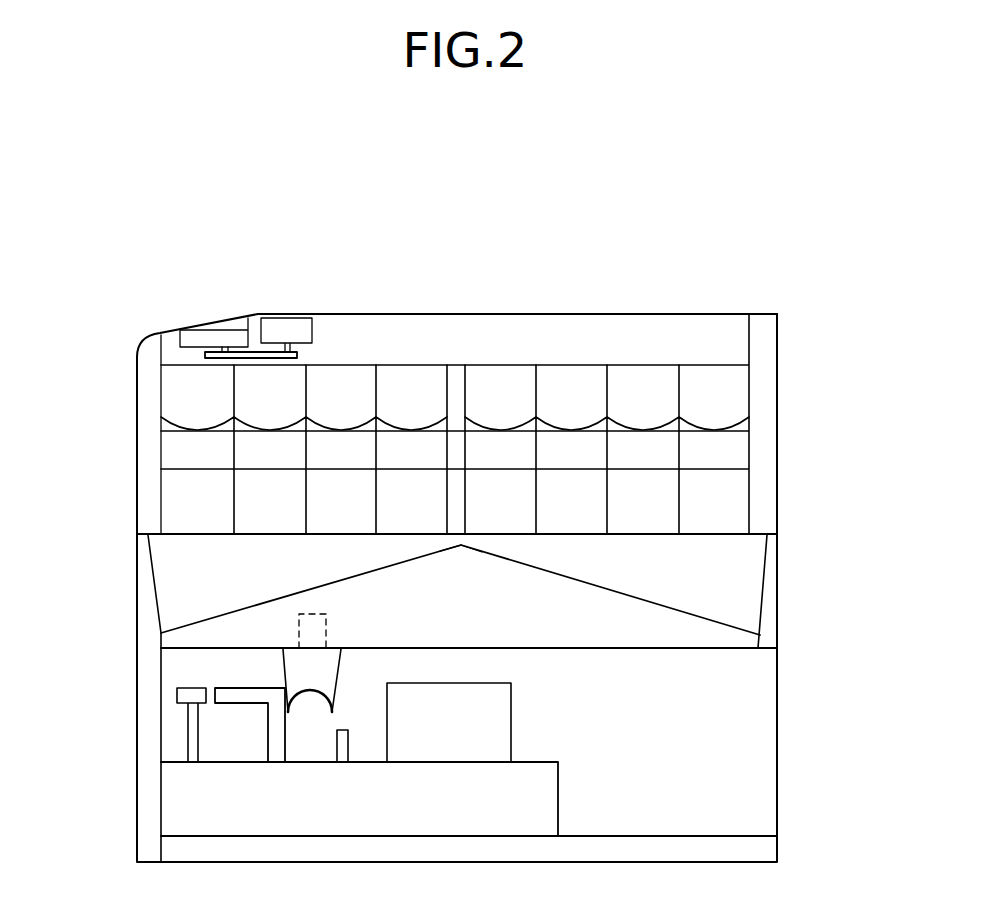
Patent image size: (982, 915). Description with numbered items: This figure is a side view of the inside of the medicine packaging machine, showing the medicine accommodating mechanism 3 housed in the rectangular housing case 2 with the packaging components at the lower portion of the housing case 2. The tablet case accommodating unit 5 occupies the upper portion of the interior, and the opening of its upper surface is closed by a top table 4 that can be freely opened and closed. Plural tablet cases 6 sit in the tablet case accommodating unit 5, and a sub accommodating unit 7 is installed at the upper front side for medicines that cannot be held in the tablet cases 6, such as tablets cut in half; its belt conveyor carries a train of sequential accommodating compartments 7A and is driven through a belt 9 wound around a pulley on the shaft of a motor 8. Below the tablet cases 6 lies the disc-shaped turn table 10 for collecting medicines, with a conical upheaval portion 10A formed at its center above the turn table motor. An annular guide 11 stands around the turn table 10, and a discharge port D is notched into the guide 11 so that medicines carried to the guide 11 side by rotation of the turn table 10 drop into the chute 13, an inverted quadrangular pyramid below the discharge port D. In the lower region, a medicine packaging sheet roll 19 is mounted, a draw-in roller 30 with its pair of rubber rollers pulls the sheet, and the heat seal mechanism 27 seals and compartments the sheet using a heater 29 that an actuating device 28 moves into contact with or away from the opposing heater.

The housing case 2 is at (778, 349).
The medicine accommodating mechanism 3 is at (506, 387).
The top table 4 is at (430, 315).
The tablet case accommodating unit 5 is at (162, 353).
The tablet case 6 is at (707, 365).
The sub accommodating unit 7 is at (197, 328).
The accommodating compartment 7A is at (192, 325).
The motor 8 is at (292, 332).
The belt 9 is at (213, 358).
The turn table 10 is at (703, 617).
The upheaval portion 10A is at (512, 555).
The guide 11 is at (817, 600).
The chute 13 is at (323, 673).
The medicine packaging sheet roll 19 is at (492, 715).
The heat seal mechanism 27 is at (206, 777).
The actuating device 28 is at (343, 753).
The heater 29 is at (277, 752).
The draw-in roller 30 is at (177, 695).
The discharge port D is at (308, 614).